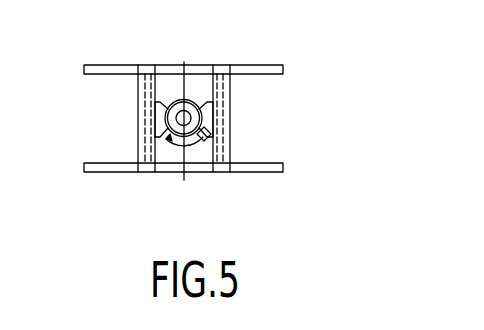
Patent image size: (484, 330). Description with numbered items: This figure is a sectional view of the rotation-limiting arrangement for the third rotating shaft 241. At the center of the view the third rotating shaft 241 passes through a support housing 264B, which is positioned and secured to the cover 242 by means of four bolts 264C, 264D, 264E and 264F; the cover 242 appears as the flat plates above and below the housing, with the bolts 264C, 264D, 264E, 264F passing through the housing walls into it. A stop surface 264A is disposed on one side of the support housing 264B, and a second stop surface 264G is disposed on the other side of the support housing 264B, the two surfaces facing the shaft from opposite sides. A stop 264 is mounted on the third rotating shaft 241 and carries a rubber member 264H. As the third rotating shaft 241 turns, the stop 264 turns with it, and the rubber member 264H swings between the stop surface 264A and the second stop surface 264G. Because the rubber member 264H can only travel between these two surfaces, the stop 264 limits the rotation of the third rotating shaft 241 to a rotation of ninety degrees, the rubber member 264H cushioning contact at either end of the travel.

The third rotating shaft 241 is at (193, 100).
The cover 242 is at (261, 64).
The stop 264 is at (214, 123).
The stop surface 264A is at (160, 133).
The support housing 264B is at (168, 84).
The bolt 264C is at (220, 68).
The bolt 264D is at (149, 81).
The bolt 264E is at (149, 175).
The bolt 264F is at (224, 175).
The second stop surface 264G is at (214, 112).
The rubber member 264H is at (206, 135).